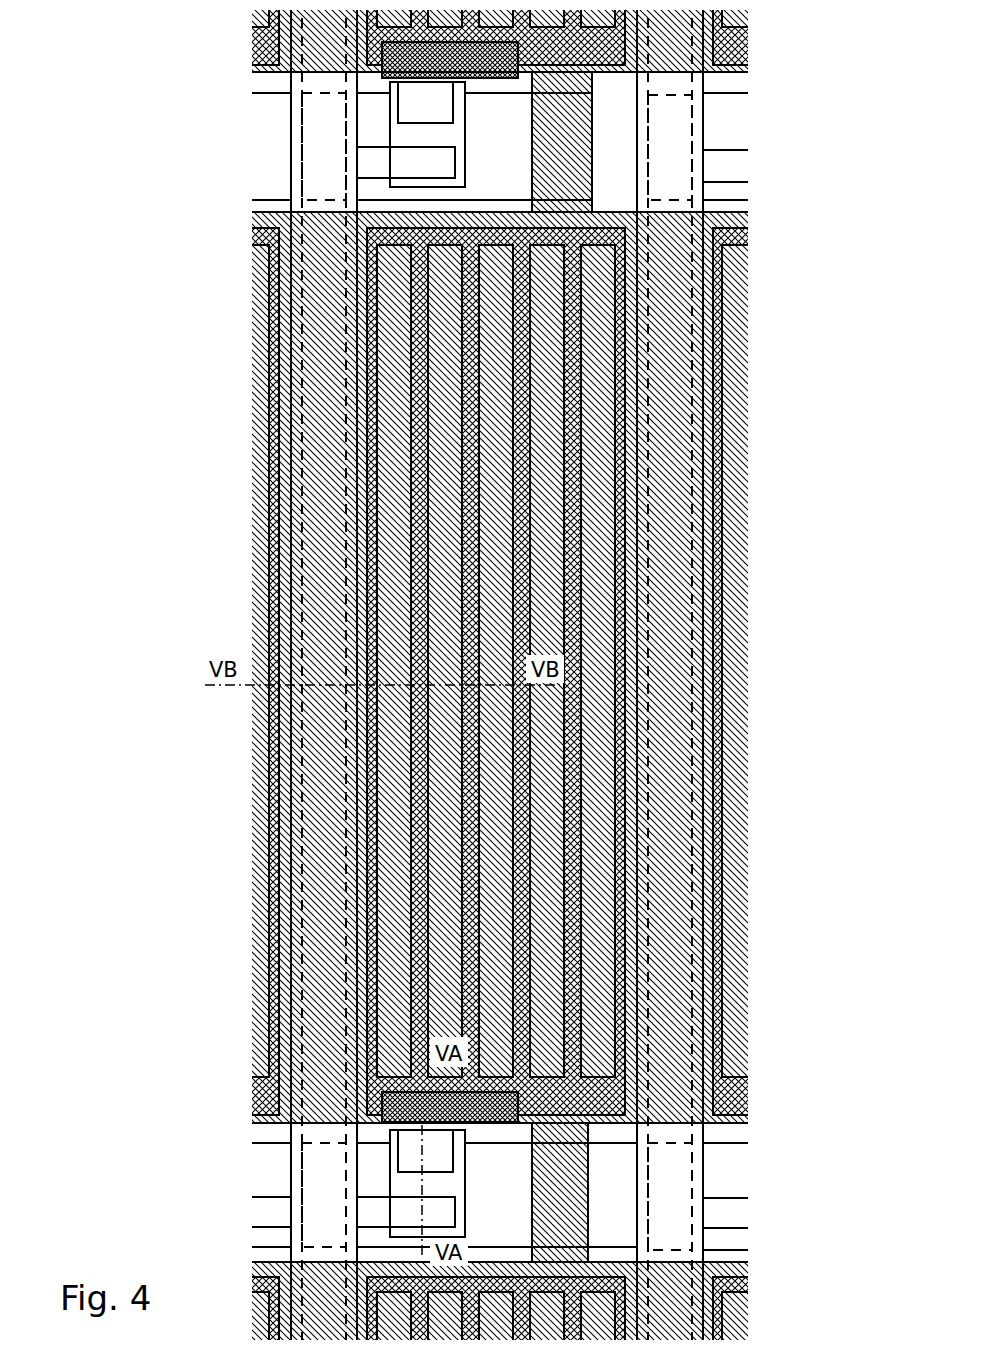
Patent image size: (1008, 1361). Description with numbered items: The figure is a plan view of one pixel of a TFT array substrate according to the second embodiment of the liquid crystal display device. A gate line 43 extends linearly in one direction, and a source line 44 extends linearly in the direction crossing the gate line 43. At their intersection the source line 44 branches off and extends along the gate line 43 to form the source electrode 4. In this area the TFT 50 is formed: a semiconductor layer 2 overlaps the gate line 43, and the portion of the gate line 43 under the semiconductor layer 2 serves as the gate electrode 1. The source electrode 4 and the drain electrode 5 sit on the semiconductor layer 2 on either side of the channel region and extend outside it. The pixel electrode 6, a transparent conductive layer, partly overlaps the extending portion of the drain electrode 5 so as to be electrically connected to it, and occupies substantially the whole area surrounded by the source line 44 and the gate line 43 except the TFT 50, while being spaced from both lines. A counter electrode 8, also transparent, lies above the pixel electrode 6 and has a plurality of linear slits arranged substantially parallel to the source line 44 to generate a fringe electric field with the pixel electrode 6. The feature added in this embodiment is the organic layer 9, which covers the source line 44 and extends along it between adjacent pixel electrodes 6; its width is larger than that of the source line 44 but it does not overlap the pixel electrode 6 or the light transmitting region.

The gate electrode 1 is at (400, 1242).
The semiconductor layer 2 is at (463, 1229).
The source electrode 4 is at (400, 1210).
The drain electrode 5 is at (465, 1152).
The pixel electrode 6 is at (627, 1000).
The counter electrode 8 is at (580, 933).
The organic layer 9 is at (312, 1135).
The gate line 43 is at (727, 1177).
The source line 44 is at (310, 1170).
The TFT 50 is at (468, 1180).